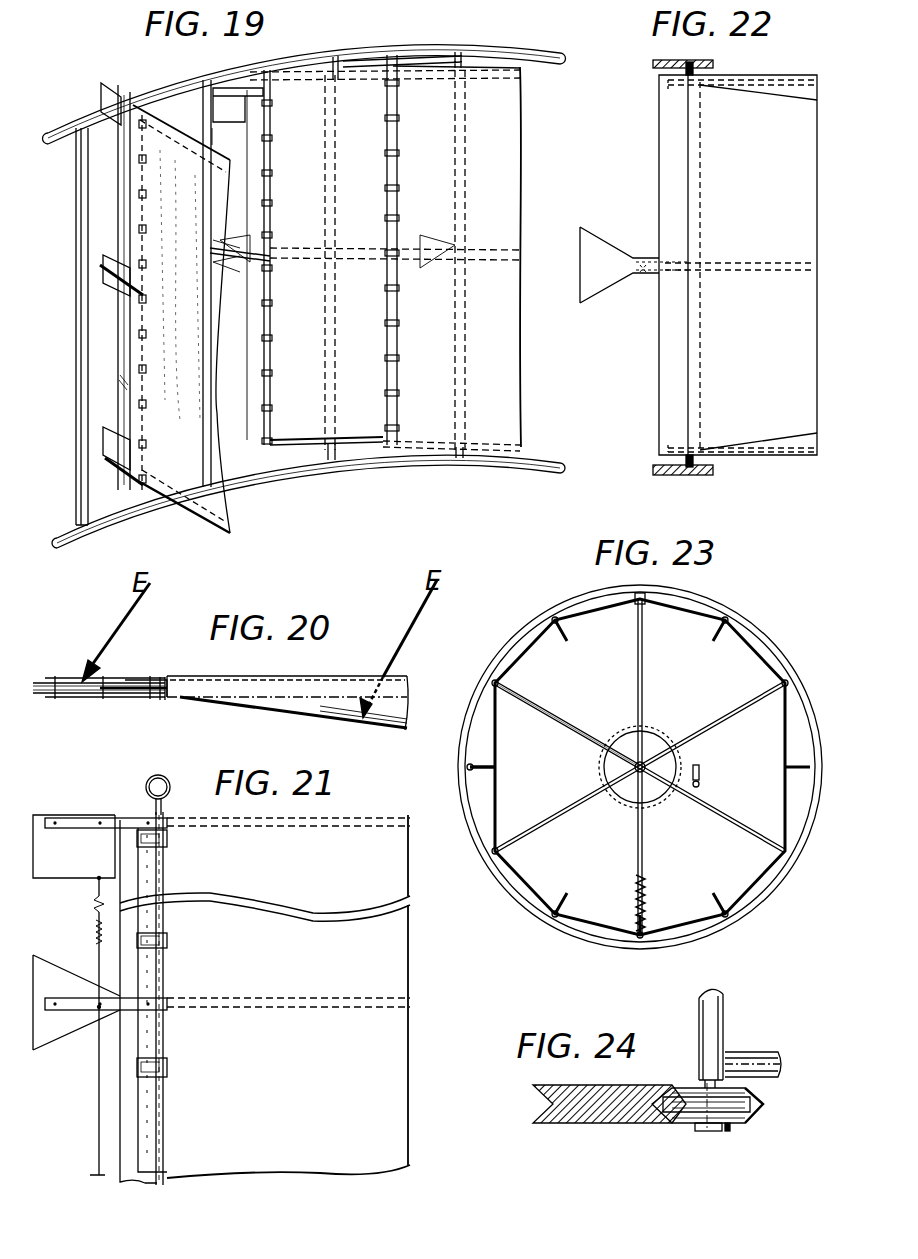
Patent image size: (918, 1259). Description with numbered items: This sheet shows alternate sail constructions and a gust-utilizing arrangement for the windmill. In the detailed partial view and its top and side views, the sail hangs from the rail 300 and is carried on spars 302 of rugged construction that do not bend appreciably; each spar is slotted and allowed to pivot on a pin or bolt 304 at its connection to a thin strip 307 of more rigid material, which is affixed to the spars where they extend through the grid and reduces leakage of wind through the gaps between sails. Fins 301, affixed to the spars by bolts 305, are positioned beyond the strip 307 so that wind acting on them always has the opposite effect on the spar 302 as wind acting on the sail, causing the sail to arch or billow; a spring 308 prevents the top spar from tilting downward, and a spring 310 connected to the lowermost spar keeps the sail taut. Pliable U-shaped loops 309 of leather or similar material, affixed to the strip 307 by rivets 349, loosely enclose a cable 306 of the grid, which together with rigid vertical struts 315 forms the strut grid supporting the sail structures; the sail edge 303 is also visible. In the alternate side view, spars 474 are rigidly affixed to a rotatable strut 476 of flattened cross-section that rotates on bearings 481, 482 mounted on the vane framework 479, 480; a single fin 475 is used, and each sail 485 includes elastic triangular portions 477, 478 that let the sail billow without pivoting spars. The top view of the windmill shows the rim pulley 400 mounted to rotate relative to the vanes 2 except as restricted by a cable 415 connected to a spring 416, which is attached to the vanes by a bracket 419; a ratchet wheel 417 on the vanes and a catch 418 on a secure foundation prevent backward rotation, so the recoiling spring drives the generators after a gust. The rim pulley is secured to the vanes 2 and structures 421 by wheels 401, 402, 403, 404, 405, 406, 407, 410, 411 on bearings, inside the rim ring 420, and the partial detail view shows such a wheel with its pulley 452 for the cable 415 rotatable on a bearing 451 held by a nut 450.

In FIG. 23, the vanes 2 is at (633, 700).
In FIG. 24, the vanes 2 is at (728, 1033).
In FIG. 19, the rim rail or rim pulley 300 is at (418, 40).
In FIG. 21, the rim rail or rim pulley 300 is at (170, 788).
In FIG. 19, the fins 301 is at (120, 125).
In FIG. 20, the fins 301 is at (43, 695).
In FIG. 21, the fins 301 is at (33, 953).
In FIG. 19, the spar 302 is at (183, 513).
In FIG. 20, the spar 302 is at (118, 680).
In FIG. 21, the spar 302 is at (337, 823).
In FIG. 19, the sail panel 303 is at (520, 195).
In FIG. 20, the sail panel 303 is at (353, 733).
In FIG. 21, the sail panel 303 is at (412, 1065).
In FIG. 20, the pin or bolt 304 is at (147, 703).
In FIG. 21, the pin or bolt 304 is at (150, 823).
In FIG. 20, the bolts 305 is at (105, 703).
In FIG. 19, the cable 306 is at (272, 453).
In FIG. 20, the cable 306 is at (160, 677).
In FIG. 21, the cable 306 is at (153, 803).
In FIG. 19, the thin strip 307 is at (137, 388).
In FIG. 21, the thin strip 307 is at (122, 1078).
In FIG. 19, the spring 308 is at (128, 210).
In FIG. 21, the spring 308 is at (97, 923).
In FIG. 21, the U-shaped loops 309 is at (167, 1067).
In FIG. 19, the spring 310 is at (122, 378).
In FIG. 19, the vertical members (struts) 315 is at (78, 447).
In FIG. 21, the rivets 349 is at (160, 930).
In FIG. 23, the wheels 400 is at (652, 595).
In FIG. 23, the wheels 401 is at (552, 620).
In FIG. 23, the wheels 402 is at (492, 682).
In FIG. 23, the wheels 403 is at (468, 769).
In FIG. 23, the wheels 404 is at (493, 853).
In FIG. 23, the wheels 405 is at (557, 917).
In FIG. 23, the wheels 406 is at (643, 940).
In FIG. 23, the wheels 407 is at (713, 917).
In FIG. 23, the wheels 410 is at (783, 680).
In FIG. 23, the wheels 411 is at (728, 620).
In FIG. 23, the cable 415 is at (590, 603).
In FIG. 24, the cable 415 is at (670, 1100).
In FIG. 23, the spring 416 is at (647, 873).
In FIG. 23, the ratchet wheel 417 is at (660, 727).
In FIG. 23, the catch 418 is at (699, 773).
In FIG. 23, the bracket 419 is at (643, 917).
In FIG. 23, the ring 420 is at (530, 913).
In FIG. 24, the ring 420 is at (603, 1125).
In FIG. 23, the structures 421 is at (480, 760).
In FIG. 24, the nut 450 is at (697, 1132).
In FIG. 24, the bearing 451 is at (730, 1127).
In FIG. 24, the pulley 452 is at (757, 1105).
In FIG. 22, the spars 474 is at (770, 78).
In FIG. 22, the fin 475 is at (600, 233).
In FIG. 22, the rotatable strut 476 is at (662, 173).
In FIG. 22, the triangular shaped portion 477 is at (813, 88).
In FIG. 22, the triangular shaped portion 478 is at (807, 442).
In FIG. 22, the vane framework 479 is at (658, 62).
In FIG. 22, the vane framework 480 is at (650, 470).
In FIG. 22, the bearing 481 is at (692, 57).
In FIG. 22, the bearing 482 is at (695, 473).
In FIG. 22, the sail 485 is at (727, 330).